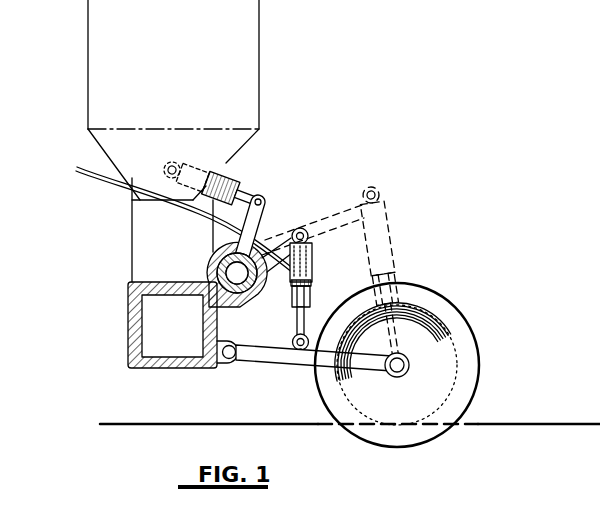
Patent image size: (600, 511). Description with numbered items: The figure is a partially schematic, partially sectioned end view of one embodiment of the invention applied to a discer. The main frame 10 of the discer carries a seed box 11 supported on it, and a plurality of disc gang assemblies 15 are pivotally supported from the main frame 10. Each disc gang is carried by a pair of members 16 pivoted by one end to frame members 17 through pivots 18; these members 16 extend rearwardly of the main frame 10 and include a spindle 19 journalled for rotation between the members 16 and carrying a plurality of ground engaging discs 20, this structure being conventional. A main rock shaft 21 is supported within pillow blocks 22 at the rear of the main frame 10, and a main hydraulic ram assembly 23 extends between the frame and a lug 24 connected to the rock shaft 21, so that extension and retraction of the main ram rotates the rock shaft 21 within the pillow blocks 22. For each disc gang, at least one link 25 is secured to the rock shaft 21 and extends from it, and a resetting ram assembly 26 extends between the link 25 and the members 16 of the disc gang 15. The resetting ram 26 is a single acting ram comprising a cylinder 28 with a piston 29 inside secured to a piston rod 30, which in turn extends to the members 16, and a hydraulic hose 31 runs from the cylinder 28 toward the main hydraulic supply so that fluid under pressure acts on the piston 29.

The main frame 10 is at (128, 329).
The seed box 11 is at (88, 22).
The disc gang assembly 15 is at (415, 365).
The members 16 is at (367, 366).
The frame members 17 is at (222, 368).
The pivots 18 is at (233, 366).
The spindle 19 is at (405, 370).
The ground engaging discs 20 is at (468, 345).
The main rock shaft 21 is at (207, 280).
The pillow blocks 22 is at (207, 262).
The main hydraulic ram assembly 23 is at (246, 190).
The lug 24 is at (268, 212).
The link 25 is at (350, 200).
The resetting ram assembly 26 is at (289, 297).
The cylinder 28 is at (311, 248).
The piston 29 is at (312, 273).
The piston rod 30 is at (297, 326).
The hydraulic hose 31 is at (107, 185).